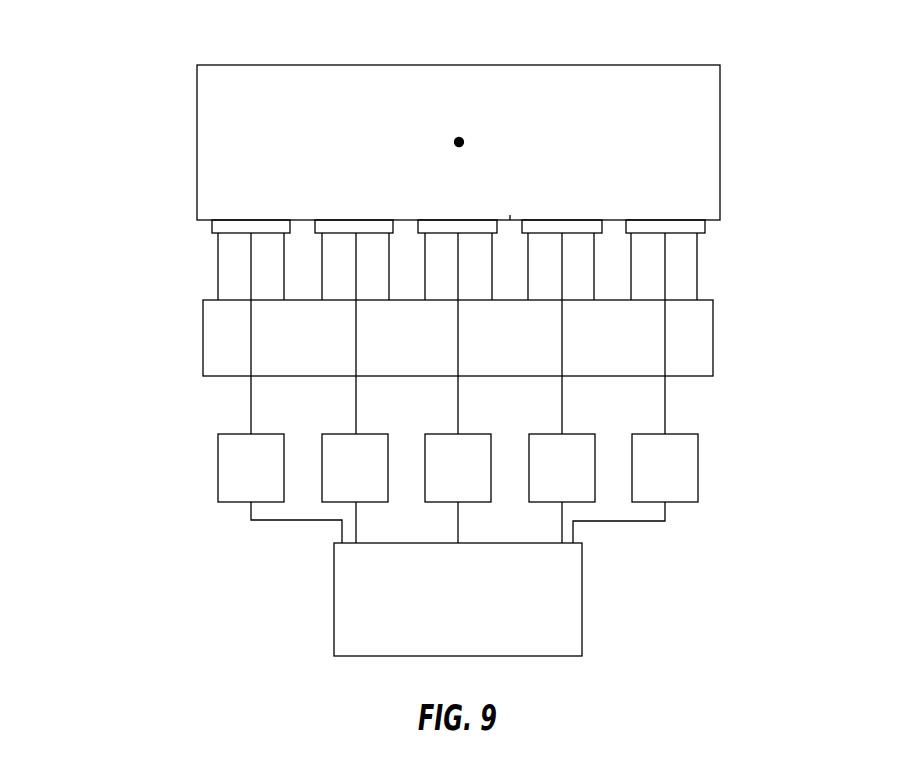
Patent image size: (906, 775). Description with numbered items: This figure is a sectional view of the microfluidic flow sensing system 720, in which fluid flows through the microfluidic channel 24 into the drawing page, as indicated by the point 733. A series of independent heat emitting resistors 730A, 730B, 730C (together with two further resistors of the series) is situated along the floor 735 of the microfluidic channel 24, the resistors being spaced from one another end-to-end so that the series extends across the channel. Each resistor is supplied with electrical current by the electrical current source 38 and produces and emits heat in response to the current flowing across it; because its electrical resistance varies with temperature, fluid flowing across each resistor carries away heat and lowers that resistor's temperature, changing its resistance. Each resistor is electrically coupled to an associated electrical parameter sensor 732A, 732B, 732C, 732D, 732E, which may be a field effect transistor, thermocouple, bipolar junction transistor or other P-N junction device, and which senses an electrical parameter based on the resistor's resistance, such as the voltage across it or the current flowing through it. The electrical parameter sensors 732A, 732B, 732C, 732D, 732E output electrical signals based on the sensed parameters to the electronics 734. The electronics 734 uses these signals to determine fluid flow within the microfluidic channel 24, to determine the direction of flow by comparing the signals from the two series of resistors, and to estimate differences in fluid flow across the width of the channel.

The microfluidic flow sensing system 720 is at (118, 207).
The microfluidic channel 24 is at (263, 95).
The point 733 is at (459, 142).
The floor 735 is at (510, 220).
The heat emitting resistor 730A is at (250, 228).
The heat emitting resistor 730B is at (353, 228).
The heat emitting resistor 730C is at (458, 228).
The electrical current source 38 is at (713, 338).
The electrical parameter sensor 732A is at (218, 464).
The electrical parameter sensor 732B is at (322, 448).
The electrical parameter sensor 732C is at (425, 448).
The electrical parameter sensor 732D is at (529, 448).
The electrical parameter sensor 732E is at (688, 433).
The electronics 734 is at (582, 580).